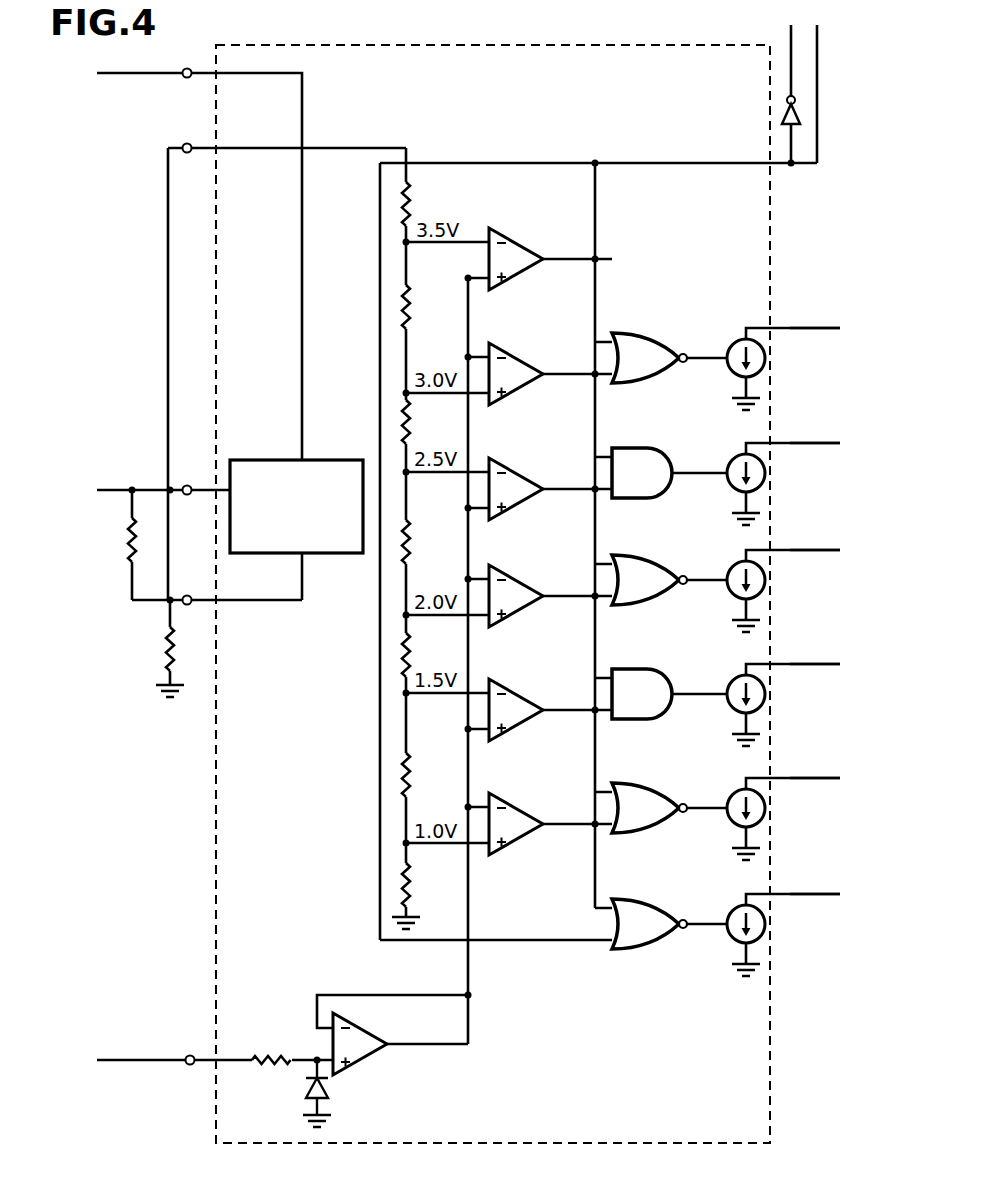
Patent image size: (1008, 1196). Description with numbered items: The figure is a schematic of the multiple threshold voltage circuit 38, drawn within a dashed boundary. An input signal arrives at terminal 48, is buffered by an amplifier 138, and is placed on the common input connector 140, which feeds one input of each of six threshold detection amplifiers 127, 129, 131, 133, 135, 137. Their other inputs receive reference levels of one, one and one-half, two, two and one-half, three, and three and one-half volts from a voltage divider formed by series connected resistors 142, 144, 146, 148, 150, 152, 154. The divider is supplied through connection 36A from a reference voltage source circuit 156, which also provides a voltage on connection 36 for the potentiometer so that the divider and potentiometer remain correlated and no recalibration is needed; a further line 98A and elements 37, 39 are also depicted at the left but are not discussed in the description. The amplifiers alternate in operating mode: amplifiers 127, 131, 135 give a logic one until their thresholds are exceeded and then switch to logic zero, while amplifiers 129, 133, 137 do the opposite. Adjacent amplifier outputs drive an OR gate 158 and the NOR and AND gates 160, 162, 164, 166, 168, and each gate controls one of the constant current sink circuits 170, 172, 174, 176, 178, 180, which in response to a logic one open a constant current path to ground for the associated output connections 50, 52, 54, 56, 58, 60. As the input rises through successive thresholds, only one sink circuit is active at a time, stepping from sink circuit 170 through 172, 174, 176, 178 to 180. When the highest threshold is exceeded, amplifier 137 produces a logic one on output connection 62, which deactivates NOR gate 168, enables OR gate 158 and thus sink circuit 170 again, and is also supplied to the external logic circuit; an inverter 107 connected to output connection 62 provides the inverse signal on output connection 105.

The multiple threshold voltage circuit 38 is at (535, 45).
The output connection 62 is at (497, 163).
The output connection 105 is at (788, 45).
The inverter 107 is at (783, 119).
The input line 98A is at (157, 74).
The connection 36A is at (168, 180).
The connection 36 is at (130, 488).
The resistor 37 is at (130, 547).
The resistor 39 is at (166, 646).
The reference voltage source circuit 156 is at (270, 458).
The resistor 154 is at (412, 213).
The resistor 152 is at (410, 324).
The resistor 150 is at (454, 430).
The resistor 148 is at (456, 540).
The resistor 146 is at (455, 648).
The resistor 144 is at (458, 760).
The resistor 142 is at (458, 878).
The common input connector 140 is at (468, 968).
The threshold detection amplifier 137 is at (508, 250).
The threshold detection amplifier 135 is at (510, 365).
The threshold detection amplifier 133 is at (508, 480).
The threshold detection amplifier 131 is at (508, 590).
The threshold detection amplifier 129 is at (510, 702).
The threshold detection amplifier 127 is at (510, 815).
The NOR gate 168 is at (628, 340).
The AND gate 166 is at (628, 455).
The NOR gate 164 is at (628, 562).
The AND gate 162 is at (628, 676).
The NOR gate 160 is at (628, 790).
The OR gate 158 is at (628, 906).
The constant current sink circuit 180 is at (733, 342).
The constant current sink circuit 178 is at (733, 457).
The constant current sink circuit 176 is at (733, 564).
The constant current sink circuit 174 is at (733, 678).
The constant current sink circuit 172 is at (733, 792).
The constant current sink circuit 170 is at (733, 908).
The output connection 60 is at (794, 328).
The output connection 58 is at (794, 443).
The output connection 56 is at (794, 550).
The output connection 54 is at (794, 664).
The output connection 52 is at (794, 778).
The output connection 50 is at (794, 894).
The input terminal 48 is at (153, 1058).
The buffer amplifier 138 is at (365, 1032).